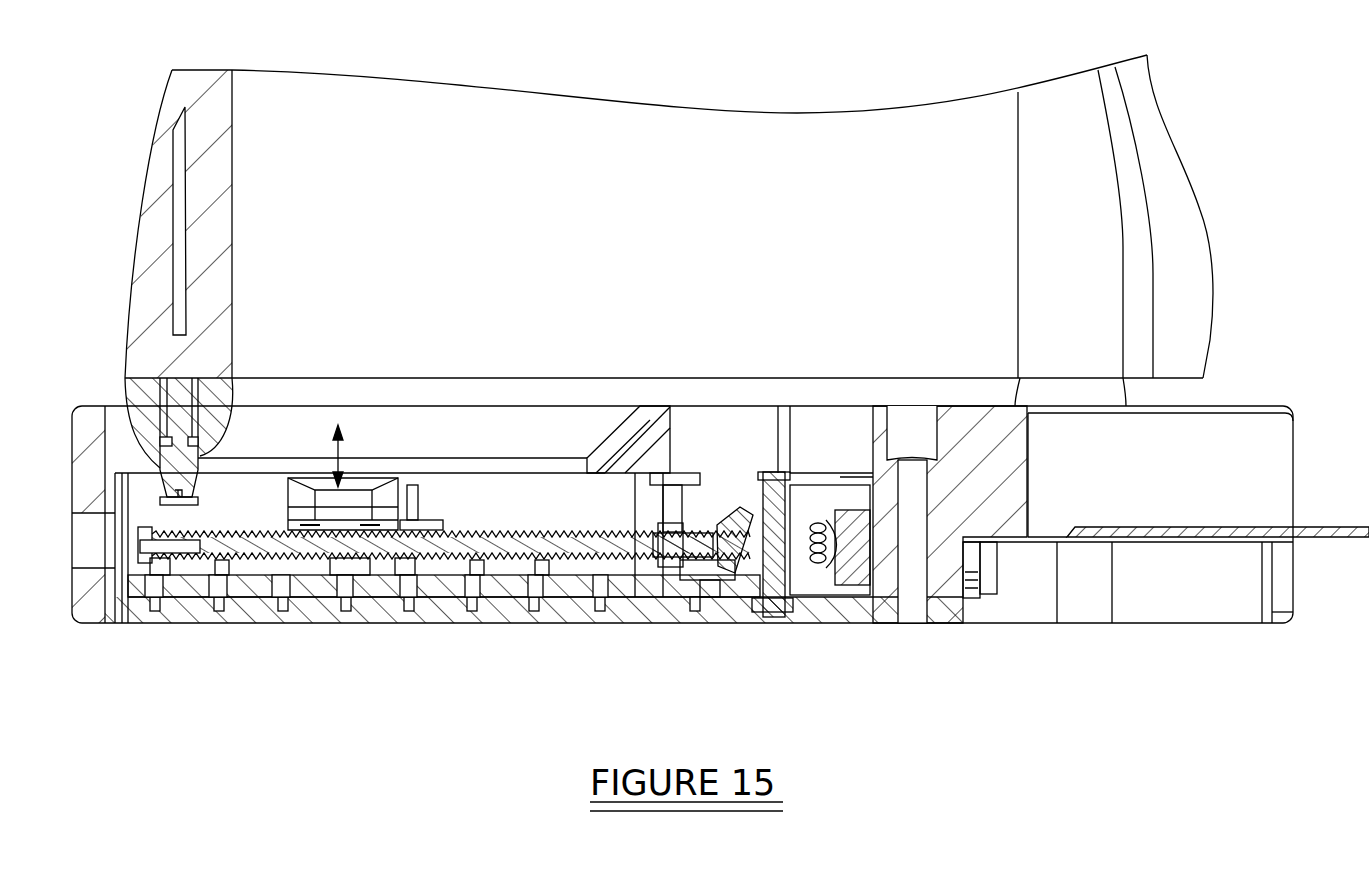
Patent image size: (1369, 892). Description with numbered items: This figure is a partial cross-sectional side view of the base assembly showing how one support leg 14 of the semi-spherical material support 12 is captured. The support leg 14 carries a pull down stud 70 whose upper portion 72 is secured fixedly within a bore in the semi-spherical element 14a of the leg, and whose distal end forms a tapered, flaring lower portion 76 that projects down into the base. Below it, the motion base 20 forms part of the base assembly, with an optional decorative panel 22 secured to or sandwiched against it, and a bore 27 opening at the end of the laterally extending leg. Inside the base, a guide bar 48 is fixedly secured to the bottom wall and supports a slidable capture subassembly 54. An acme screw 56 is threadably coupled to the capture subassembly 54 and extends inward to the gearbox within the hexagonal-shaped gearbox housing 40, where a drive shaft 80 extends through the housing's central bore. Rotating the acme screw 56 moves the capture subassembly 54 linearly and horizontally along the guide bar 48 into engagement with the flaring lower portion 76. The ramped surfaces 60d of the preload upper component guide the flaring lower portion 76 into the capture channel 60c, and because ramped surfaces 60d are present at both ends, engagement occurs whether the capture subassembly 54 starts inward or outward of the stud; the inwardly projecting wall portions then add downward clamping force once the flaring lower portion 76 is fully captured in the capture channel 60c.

The semi-spherical material support 12 is at (163, 207).
The support leg 14 is at (122, 388).
The semi-spherical element 14a is at (223, 403).
The upper portion 72 is at (180, 397).
The motion base 20 is at (181, 623).
The decorative panel 22 is at (1304, 528).
The bore 27 is at (100, 557).
The gearbox housing 40 is at (670, 495).
The guide bar 48 is at (241, 623).
The capture subassembly 54 is at (384, 470).
The acme screw 56 is at (437, 558).
The capture channel 60c is at (347, 503).
The ramped surfaces 60d is at (333, 493).
The pull down stud 70 is at (136, 462).
The flaring lower portion 76 is at (182, 483).
The drive shaft 80 is at (773, 612).